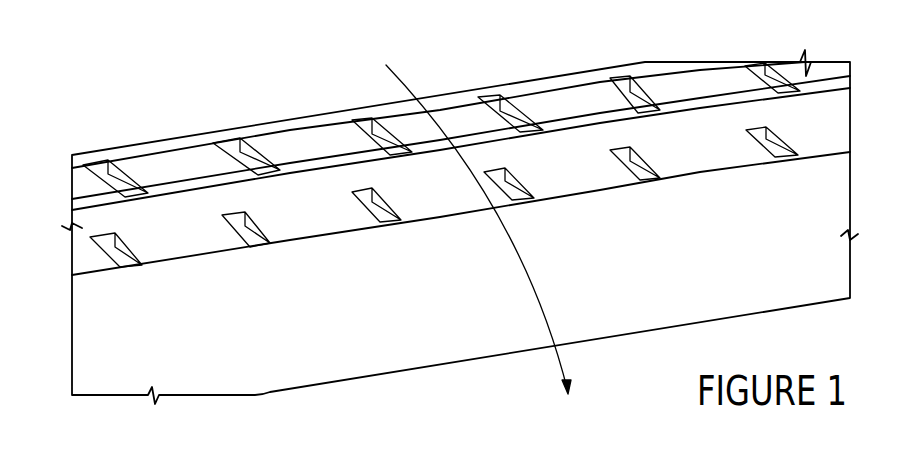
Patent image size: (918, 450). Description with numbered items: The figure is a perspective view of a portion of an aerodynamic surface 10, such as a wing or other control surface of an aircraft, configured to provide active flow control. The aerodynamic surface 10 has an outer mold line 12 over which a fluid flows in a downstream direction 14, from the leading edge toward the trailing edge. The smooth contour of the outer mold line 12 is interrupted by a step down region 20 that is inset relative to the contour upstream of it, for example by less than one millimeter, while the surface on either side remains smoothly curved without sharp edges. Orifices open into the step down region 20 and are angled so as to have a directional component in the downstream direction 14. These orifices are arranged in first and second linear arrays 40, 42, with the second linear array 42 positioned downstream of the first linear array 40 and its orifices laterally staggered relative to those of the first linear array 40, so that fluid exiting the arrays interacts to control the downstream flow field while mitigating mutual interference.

The aerodynamic surface 10 is at (501, 58).
The outer mold line 12 is at (176, 142).
The downstream direction 14 is at (409, 83).
The step down region 20 is at (82, 185).
The first linear array 40 is at (807, 62).
The second linear array 42 is at (808, 133).